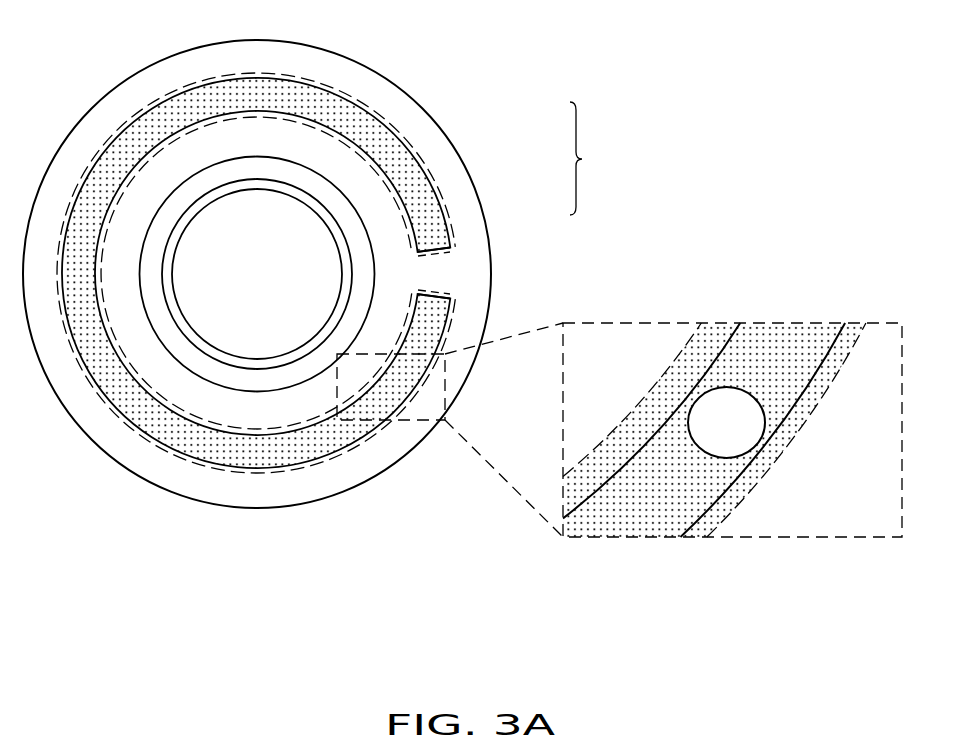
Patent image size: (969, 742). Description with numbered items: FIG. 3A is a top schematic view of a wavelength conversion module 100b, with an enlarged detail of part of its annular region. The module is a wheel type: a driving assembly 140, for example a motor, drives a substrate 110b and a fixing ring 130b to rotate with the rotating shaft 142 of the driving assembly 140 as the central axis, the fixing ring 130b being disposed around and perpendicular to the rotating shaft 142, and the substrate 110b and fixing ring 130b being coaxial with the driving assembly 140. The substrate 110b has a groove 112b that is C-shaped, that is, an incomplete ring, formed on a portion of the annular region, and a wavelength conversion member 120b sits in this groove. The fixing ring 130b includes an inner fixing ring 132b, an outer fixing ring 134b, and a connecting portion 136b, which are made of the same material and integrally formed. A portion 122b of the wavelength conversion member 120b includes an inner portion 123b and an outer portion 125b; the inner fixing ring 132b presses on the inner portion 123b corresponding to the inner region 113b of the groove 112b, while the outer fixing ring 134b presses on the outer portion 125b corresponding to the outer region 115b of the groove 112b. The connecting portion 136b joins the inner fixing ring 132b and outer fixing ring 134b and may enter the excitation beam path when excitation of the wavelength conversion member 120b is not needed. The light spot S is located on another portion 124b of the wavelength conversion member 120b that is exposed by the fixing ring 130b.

The wavelength conversion module 100b is at (452, 605).
The substrate 110b is at (338, 50).
The wavelength conversion member 120b is at (290, 450).
The portion of the wavelength conversion member 122b is at (855, 262).
The inner portion 123b is at (712, 322).
The another portion of the wavelength conversion member 124b is at (813, 358).
The outer portion 125b is at (860, 320).
The fixing ring 130b is at (696, 366).
The inner fixing ring 132b is at (383, 313).
The outer fixing ring 134b is at (432, 147).
The connecting portion 136b is at (435, 270).
The driving assembly 140 is at (232, 359).
The rotating shaft 142 is at (227, 310).
The groove 112b is at (603, 461).
The inner region 113b is at (628, 410).
The outer region 115b is at (791, 460).
The light spot S is at (715, 428).